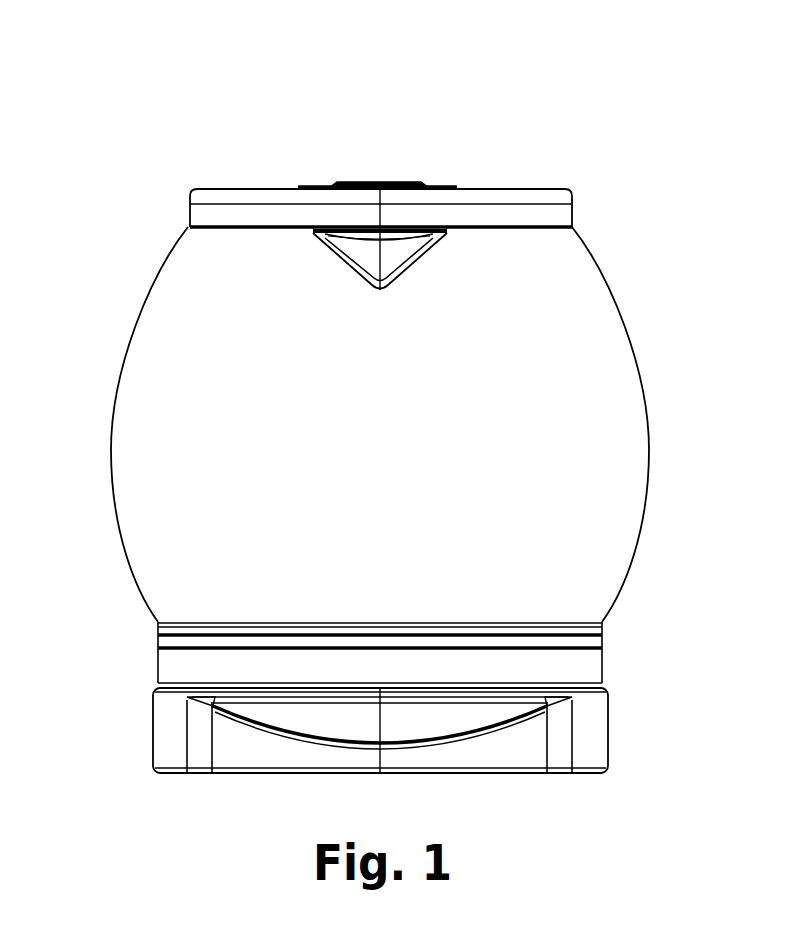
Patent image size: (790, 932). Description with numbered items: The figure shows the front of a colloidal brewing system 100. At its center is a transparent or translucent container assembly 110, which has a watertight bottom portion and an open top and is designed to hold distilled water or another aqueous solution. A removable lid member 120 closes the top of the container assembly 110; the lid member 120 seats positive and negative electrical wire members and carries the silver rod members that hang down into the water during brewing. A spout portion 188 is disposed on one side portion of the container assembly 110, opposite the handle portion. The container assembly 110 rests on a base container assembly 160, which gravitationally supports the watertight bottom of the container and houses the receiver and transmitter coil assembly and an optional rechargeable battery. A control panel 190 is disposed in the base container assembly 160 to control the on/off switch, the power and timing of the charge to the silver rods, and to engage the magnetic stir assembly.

The colloidal brewing system 100 is at (154, 36).
The container assembly 110 is at (143, 306).
The lid member 120 is at (199, 193).
The spout portion 188 is at (400, 256).
The base container assembly 160 is at (237, 757).
The control panel 190 is at (478, 717).